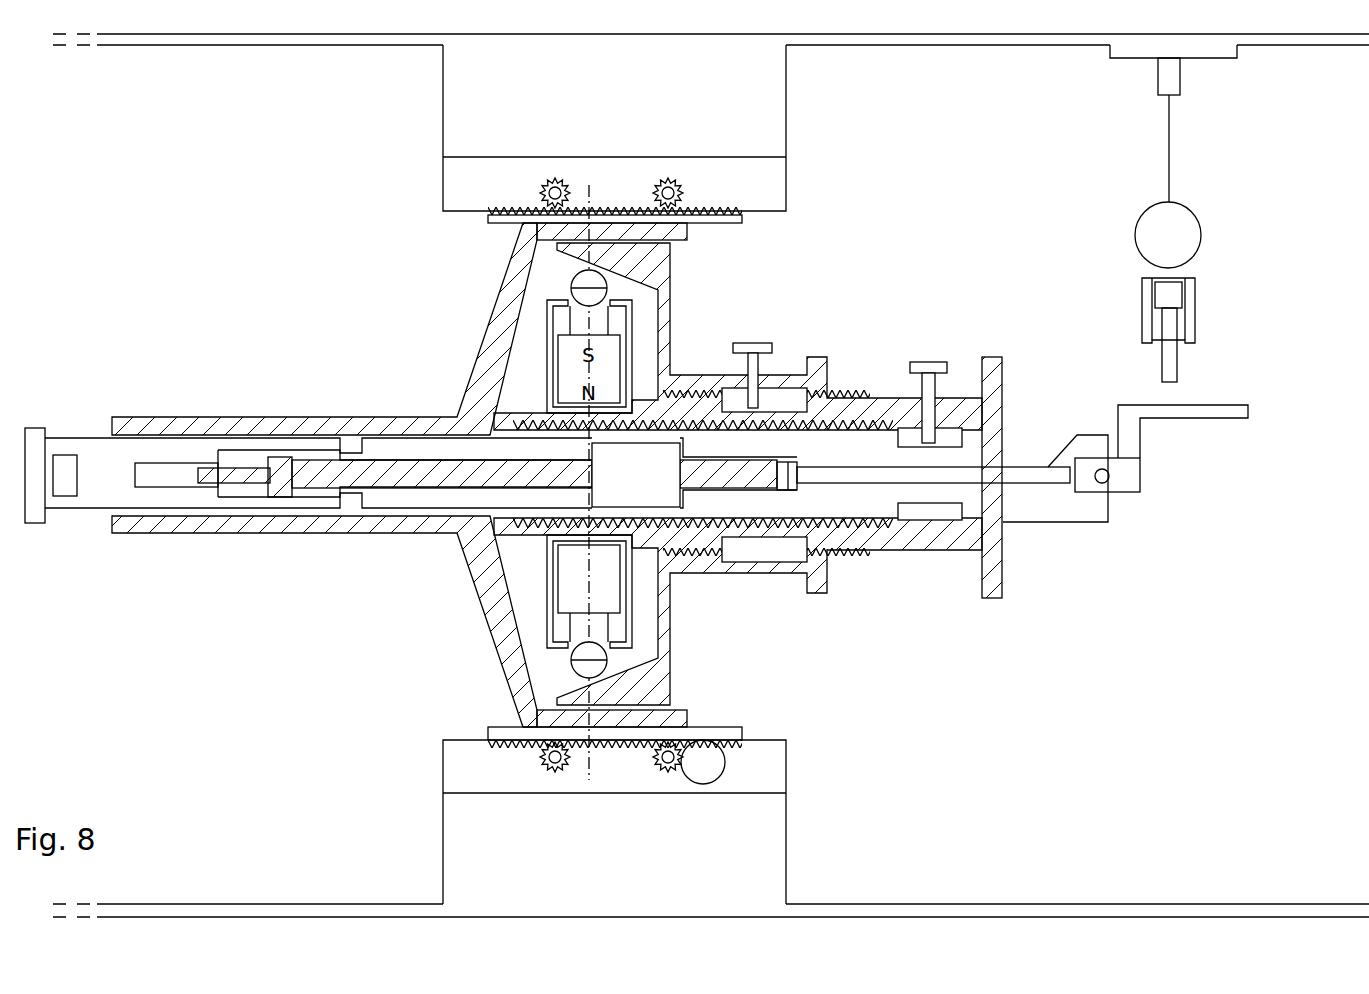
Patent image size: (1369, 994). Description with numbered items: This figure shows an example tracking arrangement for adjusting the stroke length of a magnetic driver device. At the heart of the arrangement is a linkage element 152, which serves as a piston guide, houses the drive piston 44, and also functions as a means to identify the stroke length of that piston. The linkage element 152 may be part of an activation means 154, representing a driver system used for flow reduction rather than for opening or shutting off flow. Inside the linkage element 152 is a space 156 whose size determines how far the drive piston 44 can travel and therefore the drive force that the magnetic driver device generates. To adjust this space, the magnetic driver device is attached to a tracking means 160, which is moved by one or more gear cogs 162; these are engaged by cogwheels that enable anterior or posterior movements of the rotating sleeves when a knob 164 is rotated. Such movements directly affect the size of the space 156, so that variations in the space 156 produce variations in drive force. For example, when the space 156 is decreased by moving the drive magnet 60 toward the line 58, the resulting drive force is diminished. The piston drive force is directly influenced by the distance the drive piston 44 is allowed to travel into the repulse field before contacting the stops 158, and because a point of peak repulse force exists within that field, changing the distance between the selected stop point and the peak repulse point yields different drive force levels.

The drive piston 44 is at (307, 475).
The line 58 is at (568, 598).
The drive magnet 60 is at (643, 480).
The linkage element 152 is at (105, 470).
The activation means 154 is at (27, 520).
The space 156 is at (260, 492).
The stops 158 is at (220, 497).
The tracking means 160 is at (705, 226).
The gear cogs 162 is at (548, 185).
The knob 164 is at (703, 762).